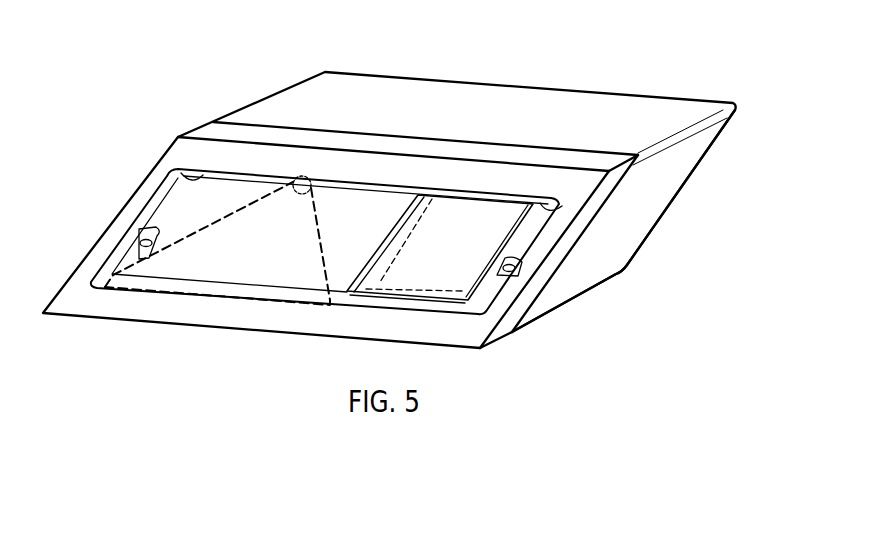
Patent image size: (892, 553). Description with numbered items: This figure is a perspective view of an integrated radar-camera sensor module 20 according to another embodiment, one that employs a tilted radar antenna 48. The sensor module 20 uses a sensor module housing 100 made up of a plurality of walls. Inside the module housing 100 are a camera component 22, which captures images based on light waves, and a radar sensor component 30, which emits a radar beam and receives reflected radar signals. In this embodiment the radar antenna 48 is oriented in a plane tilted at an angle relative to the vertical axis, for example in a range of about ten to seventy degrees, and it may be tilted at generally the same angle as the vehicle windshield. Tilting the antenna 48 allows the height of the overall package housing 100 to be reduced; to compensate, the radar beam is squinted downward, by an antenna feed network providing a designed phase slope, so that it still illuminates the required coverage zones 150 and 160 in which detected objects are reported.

The sensor module housing 100 is at (549, 84).
The integrated radar-camera sensor module 20 is at (618, 313).
The radar sensor component 30 is at (372, 222).
The camera component 22 is at (294, 177).
The coverage zone 160 is at (177, 293).
The tilted radar antenna 48 is at (455, 267).
The coverage zone 150 is at (367, 288).